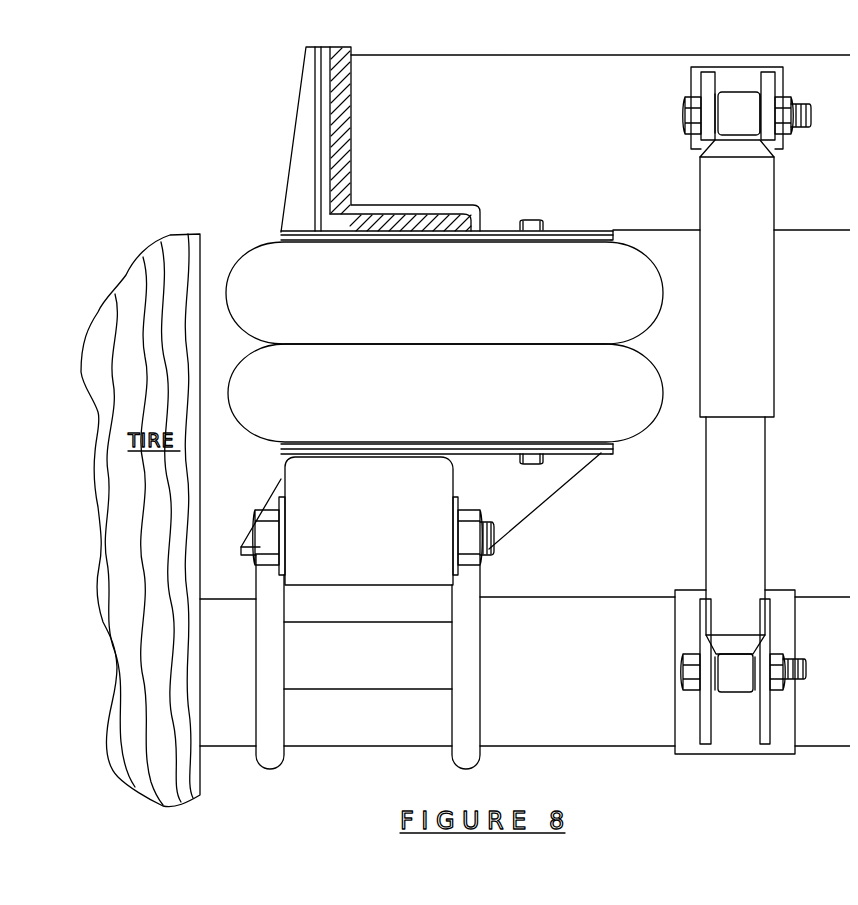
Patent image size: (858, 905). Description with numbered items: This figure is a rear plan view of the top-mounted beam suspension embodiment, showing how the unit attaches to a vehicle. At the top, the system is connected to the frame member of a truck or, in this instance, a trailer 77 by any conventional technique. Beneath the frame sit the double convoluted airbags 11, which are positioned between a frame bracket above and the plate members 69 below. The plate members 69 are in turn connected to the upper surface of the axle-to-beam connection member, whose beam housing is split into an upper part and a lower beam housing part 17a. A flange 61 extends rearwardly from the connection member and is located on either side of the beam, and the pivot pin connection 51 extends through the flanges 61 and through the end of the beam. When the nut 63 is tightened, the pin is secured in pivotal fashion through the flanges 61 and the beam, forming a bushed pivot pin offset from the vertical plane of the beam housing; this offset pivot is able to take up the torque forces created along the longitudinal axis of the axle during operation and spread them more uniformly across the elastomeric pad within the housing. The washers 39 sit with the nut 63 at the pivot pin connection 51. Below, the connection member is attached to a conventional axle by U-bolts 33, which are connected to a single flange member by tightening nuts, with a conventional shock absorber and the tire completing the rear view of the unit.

The trailer 77 is at (322, 94).
The double convoluted airbags 11 is at (344, 294).
The plate members 69 is at (605, 443).
The flange 61 is at (369, 506).
The washers 39 is at (271, 491).
The nut 63 is at (472, 514).
The pivot pin connection 51 is at (486, 539).
The lower beam housing part 17a is at (395, 649).
The U-bolts 33 is at (444, 746).